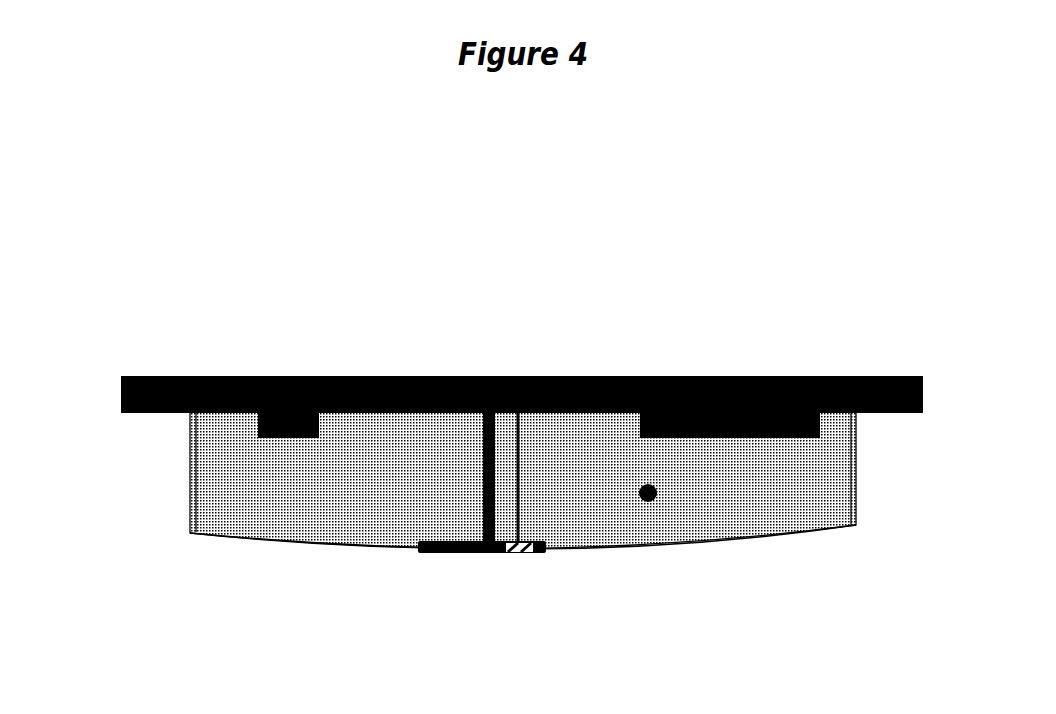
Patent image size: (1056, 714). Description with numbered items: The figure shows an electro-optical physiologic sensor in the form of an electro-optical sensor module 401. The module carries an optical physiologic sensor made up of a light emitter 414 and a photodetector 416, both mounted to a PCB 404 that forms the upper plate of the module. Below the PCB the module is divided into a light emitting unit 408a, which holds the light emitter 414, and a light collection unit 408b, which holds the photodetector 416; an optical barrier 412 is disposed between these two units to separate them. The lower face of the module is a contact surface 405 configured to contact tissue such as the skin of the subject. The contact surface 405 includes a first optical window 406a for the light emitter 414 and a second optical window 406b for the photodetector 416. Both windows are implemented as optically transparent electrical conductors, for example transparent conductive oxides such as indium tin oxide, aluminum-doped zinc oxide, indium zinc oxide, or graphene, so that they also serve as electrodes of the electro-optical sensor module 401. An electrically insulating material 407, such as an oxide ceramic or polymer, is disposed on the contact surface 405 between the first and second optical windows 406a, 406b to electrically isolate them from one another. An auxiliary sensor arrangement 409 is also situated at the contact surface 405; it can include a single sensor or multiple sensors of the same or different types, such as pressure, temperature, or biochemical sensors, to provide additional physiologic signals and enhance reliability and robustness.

The electro-optical sensor module 401 is at (772, 140).
The PCB 404 is at (584, 368).
The contact surface 405 is at (270, 552).
The first optical window 406a is at (348, 540).
The second optical window 406b is at (722, 538).
The electrically insulating material 407 is at (428, 548).
The light emitting unit 408a is at (348, 485).
The light collection unit 408b is at (594, 485).
The auxiliary sensor arrangement 409 is at (518, 548).
The optical barrier 412 is at (472, 410).
The light emitter 414 is at (244, 407).
The photodetector 416 is at (760, 407).